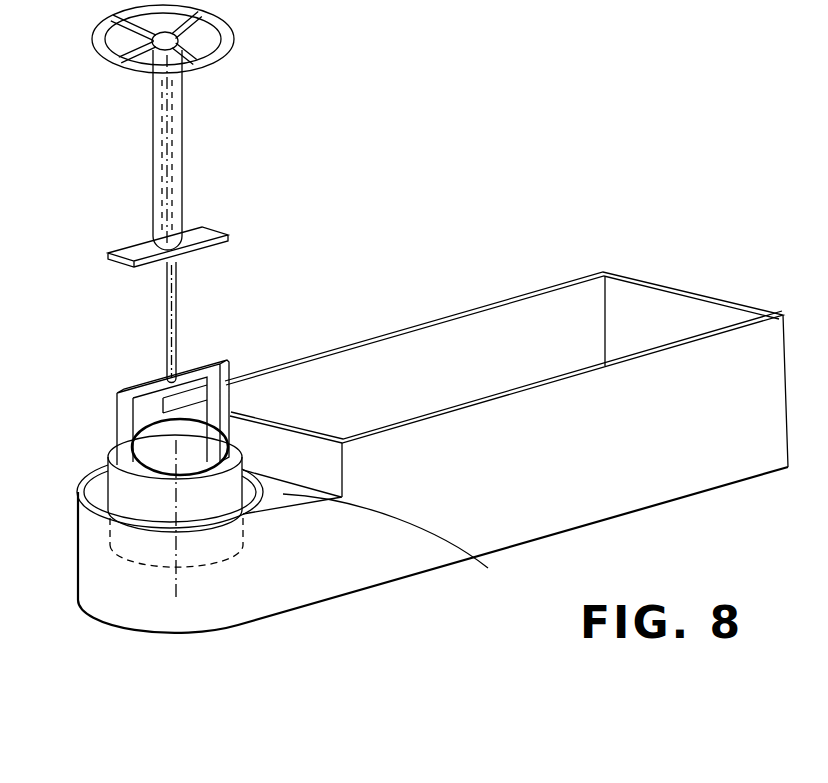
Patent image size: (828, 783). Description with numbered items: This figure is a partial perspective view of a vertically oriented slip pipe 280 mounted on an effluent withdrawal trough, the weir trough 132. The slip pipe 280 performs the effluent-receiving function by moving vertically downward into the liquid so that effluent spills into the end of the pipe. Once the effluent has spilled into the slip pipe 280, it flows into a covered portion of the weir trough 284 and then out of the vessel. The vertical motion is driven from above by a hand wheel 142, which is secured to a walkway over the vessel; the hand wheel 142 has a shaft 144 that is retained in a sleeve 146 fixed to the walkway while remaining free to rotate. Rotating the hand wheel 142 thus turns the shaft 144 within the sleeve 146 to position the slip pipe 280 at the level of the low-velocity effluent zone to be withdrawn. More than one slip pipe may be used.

The hand wheel 142 is at (230, 40).
The sleeve 146 is at (182, 135).
The shaft 144 is at (176, 290).
The weir trough 132 is at (456, 333).
The slip pipe 280 is at (103, 441).
The covered portion of the weir trough 284 is at (404, 545).